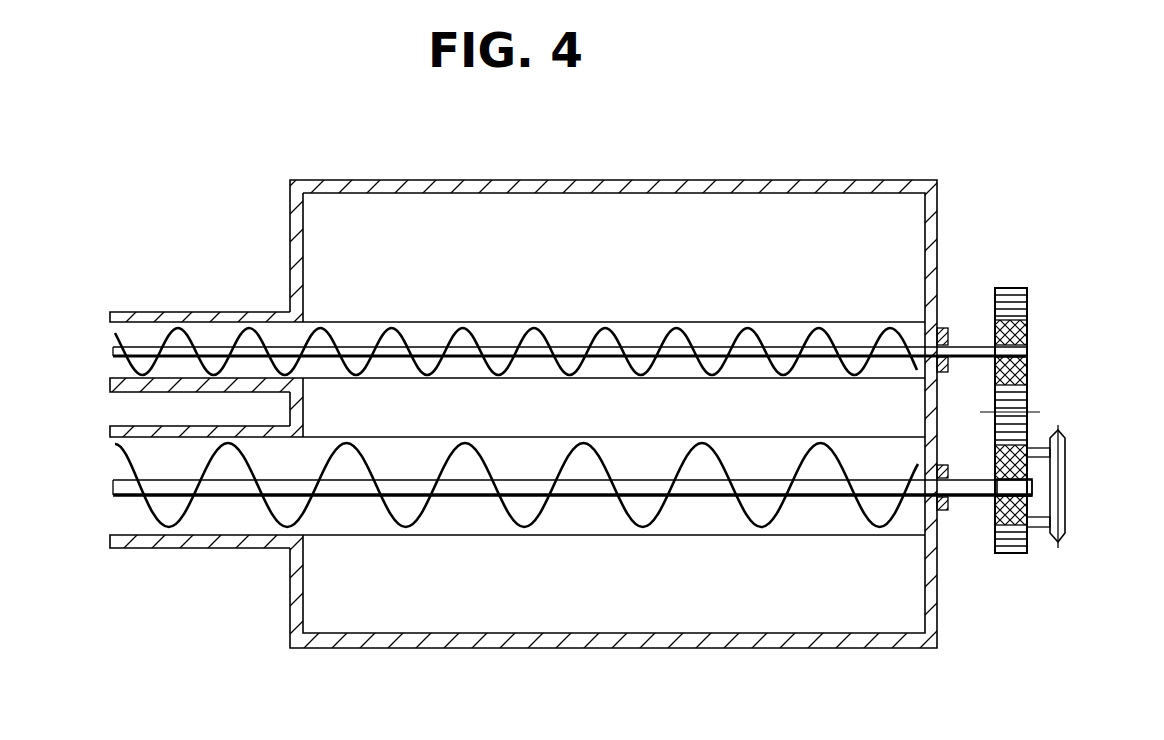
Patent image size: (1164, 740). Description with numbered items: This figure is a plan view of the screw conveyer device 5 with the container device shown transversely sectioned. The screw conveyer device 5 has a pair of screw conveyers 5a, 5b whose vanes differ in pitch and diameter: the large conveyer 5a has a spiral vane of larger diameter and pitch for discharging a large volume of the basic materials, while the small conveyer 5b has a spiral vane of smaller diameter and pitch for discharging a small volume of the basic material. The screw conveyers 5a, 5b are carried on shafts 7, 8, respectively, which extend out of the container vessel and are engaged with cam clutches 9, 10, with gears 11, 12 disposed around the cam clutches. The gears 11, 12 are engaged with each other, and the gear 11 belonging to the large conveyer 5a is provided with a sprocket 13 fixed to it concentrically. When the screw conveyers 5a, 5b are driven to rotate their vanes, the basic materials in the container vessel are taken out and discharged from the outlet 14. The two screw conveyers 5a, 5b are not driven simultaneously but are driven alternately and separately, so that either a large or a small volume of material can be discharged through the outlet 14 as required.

The screw conveyer device 5 is at (712, 306).
The large conveyer 5a is at (618, 503).
The small conveyer 5b is at (598, 335).
The shaft 7 is at (522, 502).
The shaft 8 is at (508, 345).
The cam clutch 9 is at (997, 503).
The cam clutch 10 is at (997, 337).
The gear 11 is at (1027, 437).
The gear 12 is at (1027, 298).
The sprocket 13 is at (1068, 487).
The outlet 14 is at (108, 355).